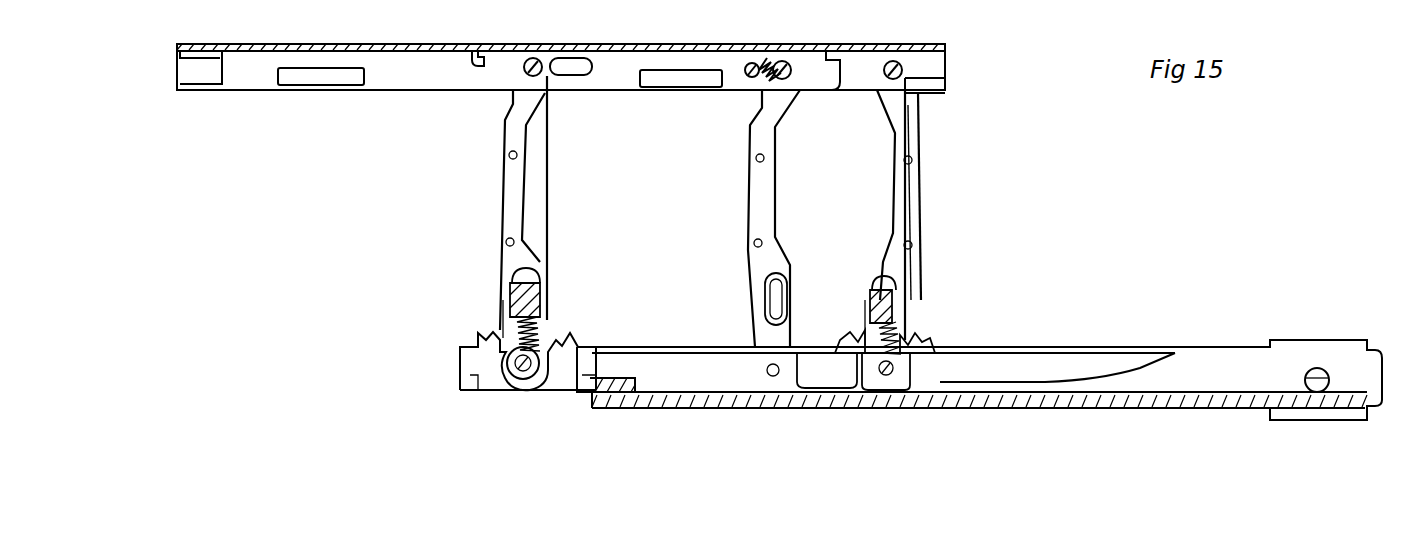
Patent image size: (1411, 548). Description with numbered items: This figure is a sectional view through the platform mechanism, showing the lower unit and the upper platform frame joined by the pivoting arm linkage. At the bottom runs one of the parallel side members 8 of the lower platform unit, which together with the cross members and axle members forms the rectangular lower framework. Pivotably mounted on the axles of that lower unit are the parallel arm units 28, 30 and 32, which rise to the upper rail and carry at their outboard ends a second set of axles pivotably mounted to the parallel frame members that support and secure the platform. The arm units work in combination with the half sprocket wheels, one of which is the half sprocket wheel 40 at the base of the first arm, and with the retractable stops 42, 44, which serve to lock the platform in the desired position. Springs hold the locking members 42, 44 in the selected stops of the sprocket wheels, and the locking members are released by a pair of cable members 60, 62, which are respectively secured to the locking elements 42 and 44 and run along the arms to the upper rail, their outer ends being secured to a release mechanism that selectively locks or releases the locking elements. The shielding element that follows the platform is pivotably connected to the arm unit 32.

The side member 8 is at (724, 388).
The parallel arm unit 28 is at (500, 191).
The parallel arm unit 30 is at (760, 190).
The parallel arm unit 32 is at (897, 190).
The half sprocket wheel 40 is at (560, 340).
The retractable stop 42 is at (510, 292).
The retractable stop 44 is at (870, 305).
The cable member 60 is at (548, 170).
The cable member 62 is at (916, 112).